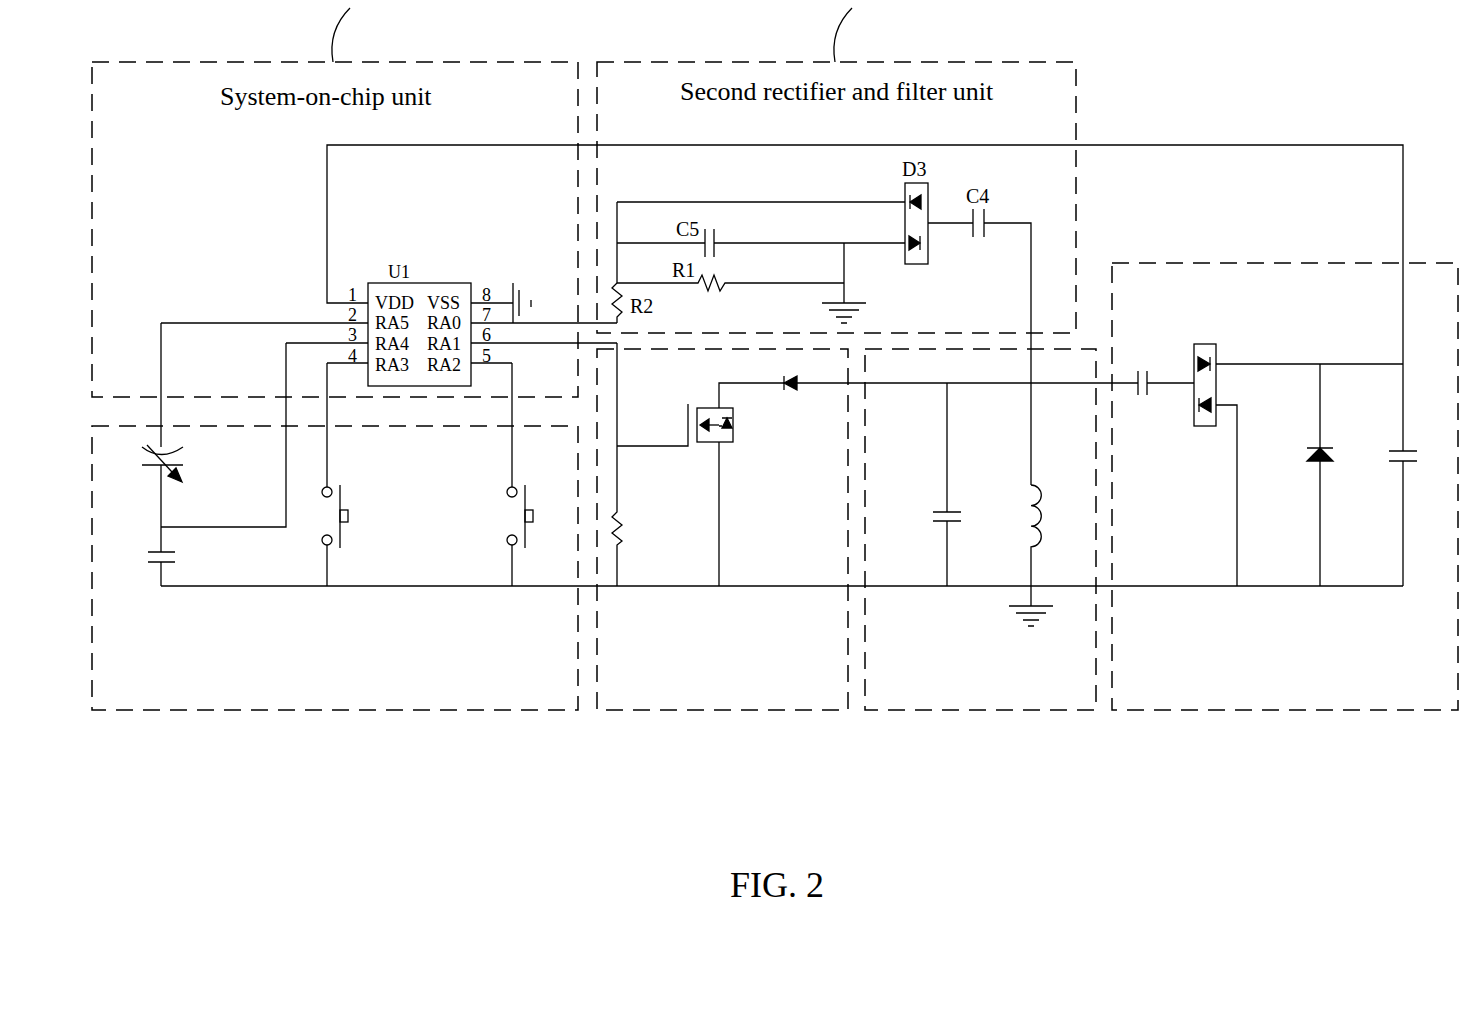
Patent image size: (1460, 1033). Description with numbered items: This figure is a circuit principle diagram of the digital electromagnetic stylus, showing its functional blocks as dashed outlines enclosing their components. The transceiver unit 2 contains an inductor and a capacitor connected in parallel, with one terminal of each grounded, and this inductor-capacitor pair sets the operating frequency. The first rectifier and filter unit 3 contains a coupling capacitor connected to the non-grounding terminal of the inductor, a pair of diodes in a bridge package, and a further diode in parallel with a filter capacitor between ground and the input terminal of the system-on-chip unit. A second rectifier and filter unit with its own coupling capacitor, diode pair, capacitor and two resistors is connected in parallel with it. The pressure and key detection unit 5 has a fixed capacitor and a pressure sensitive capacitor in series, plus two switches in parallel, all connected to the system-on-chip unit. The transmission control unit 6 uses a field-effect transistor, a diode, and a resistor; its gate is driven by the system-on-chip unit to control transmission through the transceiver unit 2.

The transceiver unit 2 is at (980, 710).
The first rectifier and filter unit 3 is at (1287, 710).
The pressure and key detection unit 5 is at (333, 710).
The transmission control unit 6 is at (723, 710).